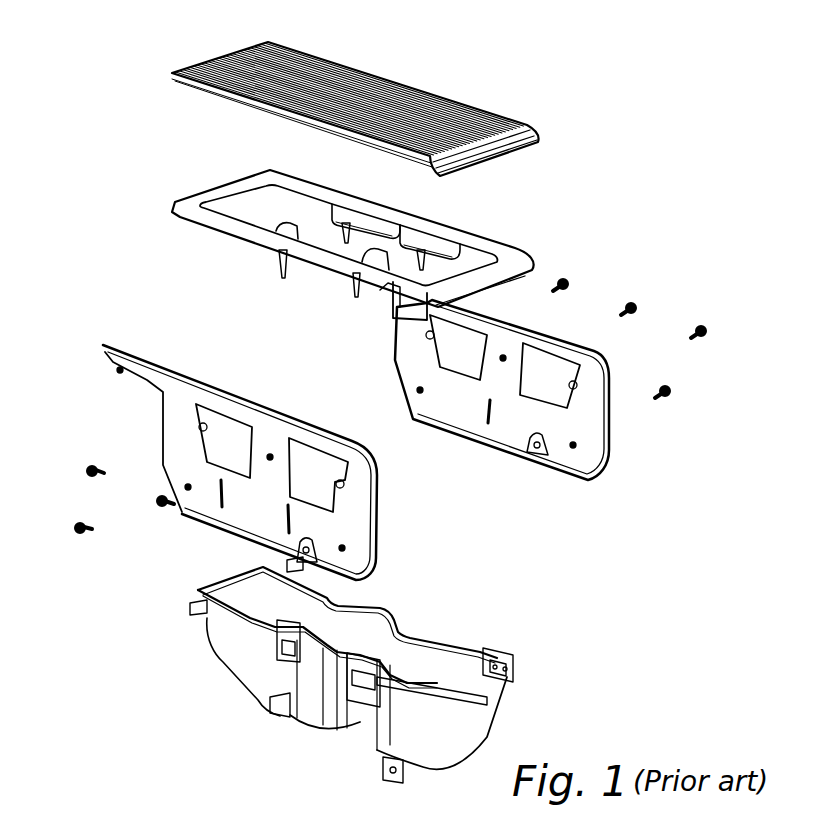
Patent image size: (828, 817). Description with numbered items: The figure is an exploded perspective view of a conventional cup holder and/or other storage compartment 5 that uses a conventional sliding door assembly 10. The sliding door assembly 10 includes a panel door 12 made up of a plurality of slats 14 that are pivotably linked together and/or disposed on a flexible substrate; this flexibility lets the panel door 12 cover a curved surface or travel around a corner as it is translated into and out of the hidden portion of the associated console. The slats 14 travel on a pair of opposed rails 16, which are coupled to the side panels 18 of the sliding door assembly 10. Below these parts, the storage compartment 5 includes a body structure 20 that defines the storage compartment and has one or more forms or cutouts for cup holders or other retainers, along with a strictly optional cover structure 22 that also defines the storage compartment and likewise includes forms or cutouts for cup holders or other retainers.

The sliding door assembly 10 is at (592, 152).
The panel door 12 is at (423, 67).
The slats 14 is at (527, 130).
The cover structure 22 is at (515, 268).
The rails 16 is at (235, 422).
The side panels 18 is at (257, 507).
The body structure 20 is at (313, 727).
The cup holder and/or other storage compartment 5 is at (527, 665).